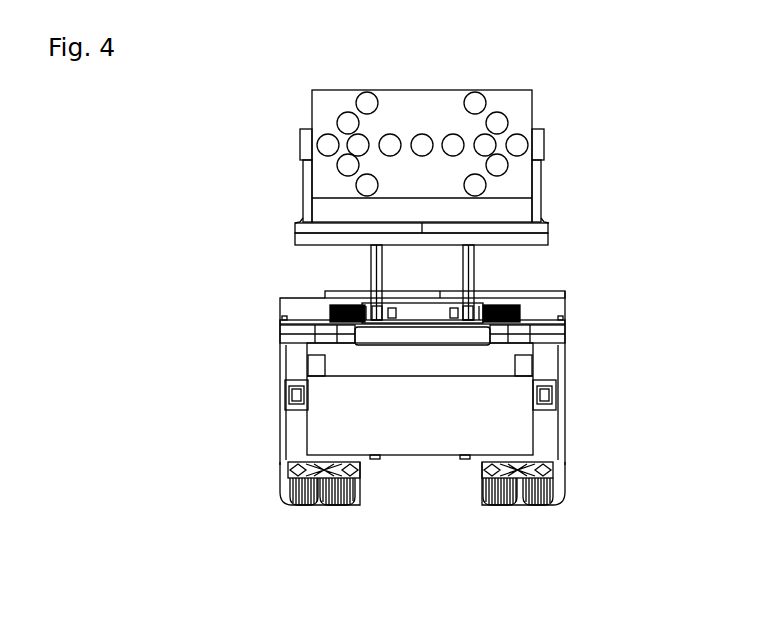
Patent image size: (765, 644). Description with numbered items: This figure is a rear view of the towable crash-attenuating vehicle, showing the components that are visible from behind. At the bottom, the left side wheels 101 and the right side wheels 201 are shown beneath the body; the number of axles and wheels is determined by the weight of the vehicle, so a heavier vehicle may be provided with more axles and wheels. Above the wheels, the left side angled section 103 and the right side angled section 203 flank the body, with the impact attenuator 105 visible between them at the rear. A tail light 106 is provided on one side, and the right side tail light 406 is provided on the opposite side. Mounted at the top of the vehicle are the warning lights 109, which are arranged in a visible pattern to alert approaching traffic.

The warning lights 109 is at (512, 113).
The left side angled section 103 is at (300, 353).
The right side angled section 203 is at (547, 357).
The impact attenuator 105 is at (480, 432).
The tail light 106 is at (287, 407).
The right side tail light 406 is at (548, 398).
The left side wheels 101 is at (343, 500).
The right side wheels 201 is at (502, 500).